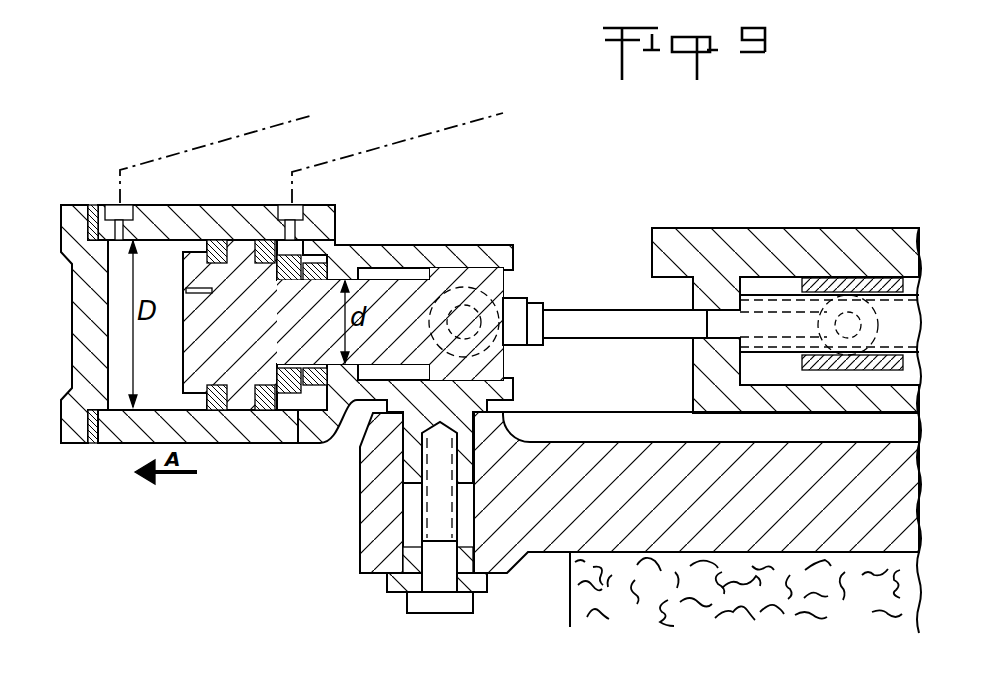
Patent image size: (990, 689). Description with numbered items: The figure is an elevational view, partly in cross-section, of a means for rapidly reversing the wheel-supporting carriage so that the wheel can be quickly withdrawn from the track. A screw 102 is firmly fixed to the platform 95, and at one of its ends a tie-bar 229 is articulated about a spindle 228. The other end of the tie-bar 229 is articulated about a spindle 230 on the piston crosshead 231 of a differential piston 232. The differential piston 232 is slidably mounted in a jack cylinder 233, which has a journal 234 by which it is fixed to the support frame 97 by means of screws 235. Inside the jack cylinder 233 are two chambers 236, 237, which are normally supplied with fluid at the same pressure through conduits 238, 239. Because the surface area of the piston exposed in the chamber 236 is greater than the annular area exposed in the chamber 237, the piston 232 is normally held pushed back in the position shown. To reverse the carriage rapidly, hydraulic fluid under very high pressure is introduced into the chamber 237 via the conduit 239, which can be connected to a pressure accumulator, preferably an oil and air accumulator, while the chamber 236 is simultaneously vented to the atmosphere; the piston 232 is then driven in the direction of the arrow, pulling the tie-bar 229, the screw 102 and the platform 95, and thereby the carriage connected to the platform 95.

The platform 95 is at (773, 238).
The support frame 97 is at (546, 530).
The screw 102 is at (907, 308).
The spindle 228 is at (851, 320).
The tie-bar 229 is at (615, 320).
The spindle 230 is at (507, 298).
The piston crosshead 231 is at (410, 298).
The differential piston 232 is at (242, 290).
The jack cylinder 233 is at (240, 433).
The journal 234 is at (412, 470).
The screws 235 is at (430, 577).
The chamber 236 is at (118, 362).
The chamber 237 is at (292, 402).
The conduit 238 is at (197, 148).
The conduit 239 is at (428, 135).